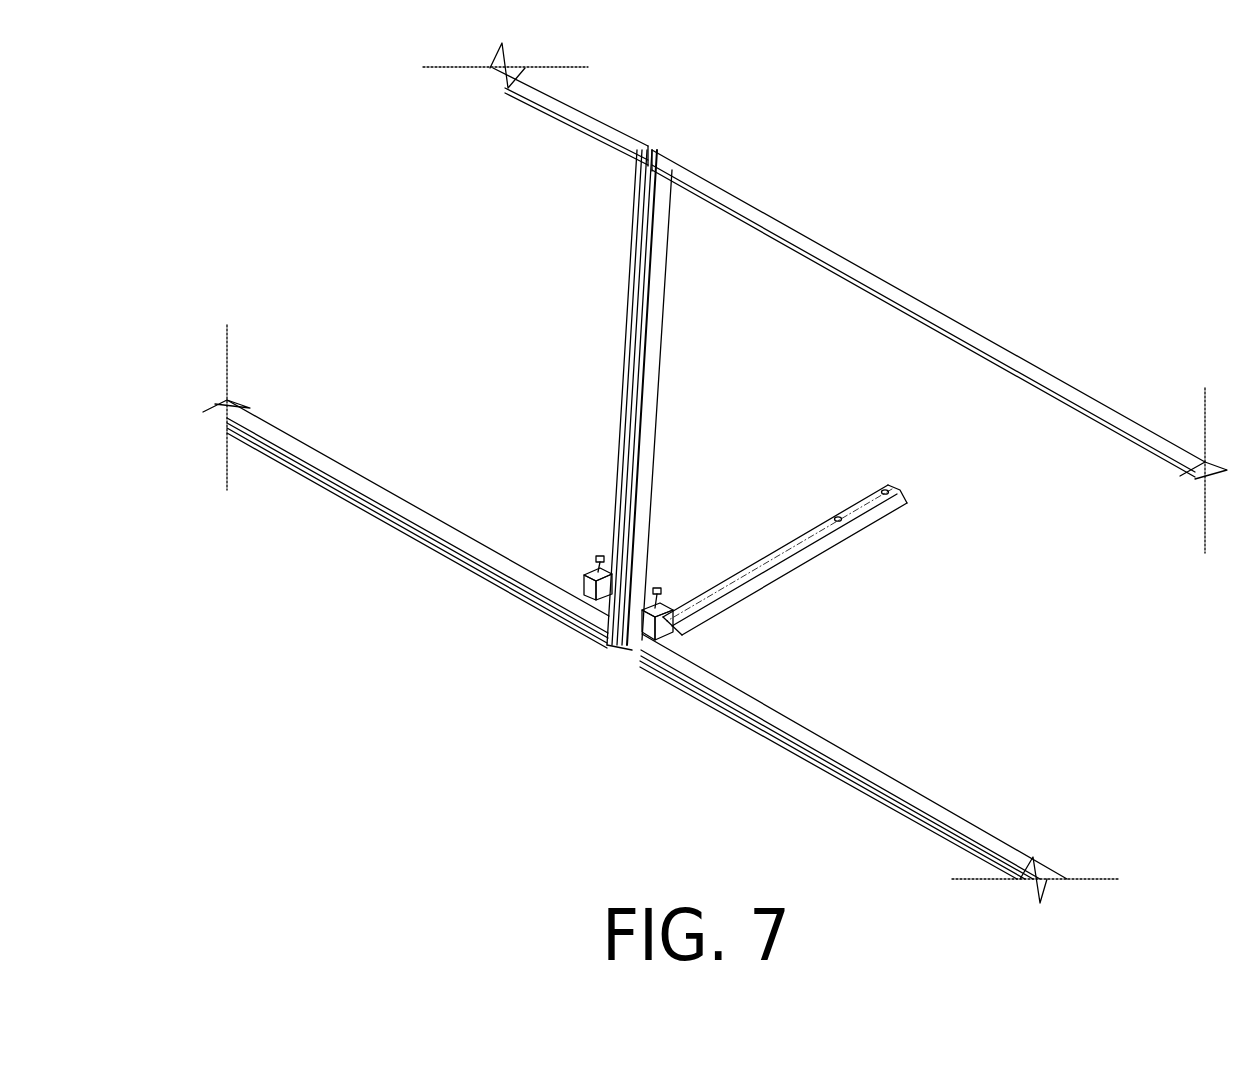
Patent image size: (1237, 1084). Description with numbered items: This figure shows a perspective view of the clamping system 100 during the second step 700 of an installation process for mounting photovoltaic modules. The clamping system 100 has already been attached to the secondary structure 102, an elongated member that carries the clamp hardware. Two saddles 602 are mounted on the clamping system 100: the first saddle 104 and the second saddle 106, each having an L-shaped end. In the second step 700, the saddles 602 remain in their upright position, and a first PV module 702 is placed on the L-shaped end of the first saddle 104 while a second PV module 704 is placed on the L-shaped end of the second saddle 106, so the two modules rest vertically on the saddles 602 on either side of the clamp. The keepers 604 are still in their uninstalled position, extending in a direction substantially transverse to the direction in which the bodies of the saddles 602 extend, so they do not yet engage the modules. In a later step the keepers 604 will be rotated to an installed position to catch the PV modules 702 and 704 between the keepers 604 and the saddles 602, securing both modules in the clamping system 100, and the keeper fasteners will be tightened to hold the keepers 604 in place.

The second step 700 is at (255, 200).
The PV module 702 is at (466, 566).
The PV module 704 is at (760, 730).
The clamping system 100 is at (672, 560).
The secondary structure 102 is at (870, 500).
The first saddle 104 is at (592, 568).
The second saddle 106 is at (683, 613).
The saddles 602 is at (588, 530).
The keepers 604 is at (705, 649).